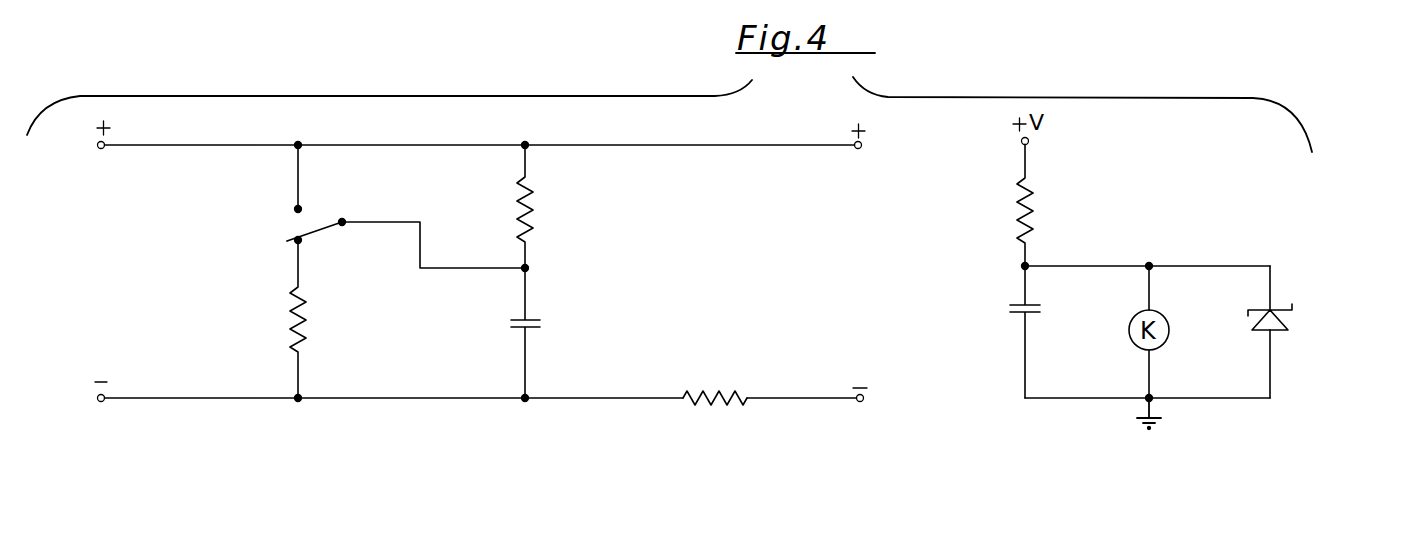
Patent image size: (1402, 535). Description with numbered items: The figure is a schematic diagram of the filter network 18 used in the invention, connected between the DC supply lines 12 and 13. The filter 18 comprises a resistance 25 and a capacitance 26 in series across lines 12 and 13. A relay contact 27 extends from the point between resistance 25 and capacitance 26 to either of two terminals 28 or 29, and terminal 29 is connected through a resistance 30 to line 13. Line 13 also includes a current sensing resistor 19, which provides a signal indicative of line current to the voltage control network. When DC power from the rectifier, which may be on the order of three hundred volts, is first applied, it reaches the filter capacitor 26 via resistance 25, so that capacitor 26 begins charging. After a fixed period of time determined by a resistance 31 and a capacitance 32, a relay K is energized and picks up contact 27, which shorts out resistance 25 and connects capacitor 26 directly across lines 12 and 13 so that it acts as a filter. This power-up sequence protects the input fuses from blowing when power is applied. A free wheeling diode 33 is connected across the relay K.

The line 12 is at (626, 144).
The line 13 is at (613, 397).
The filter 18 is at (722, 236).
The current sensing resistor 19 is at (722, 392).
The resistance 25 is at (531, 213).
The capacitance 26 is at (543, 324).
The relay contact 27 is at (322, 228).
The terminal 28 is at (297, 242).
The terminal 29 is at (292, 209).
The resistance 30 is at (304, 313).
The resistance 31 is at (1030, 221).
The capacitance 32 is at (1043, 310).
The free wheeling diode 33 is at (1290, 318).